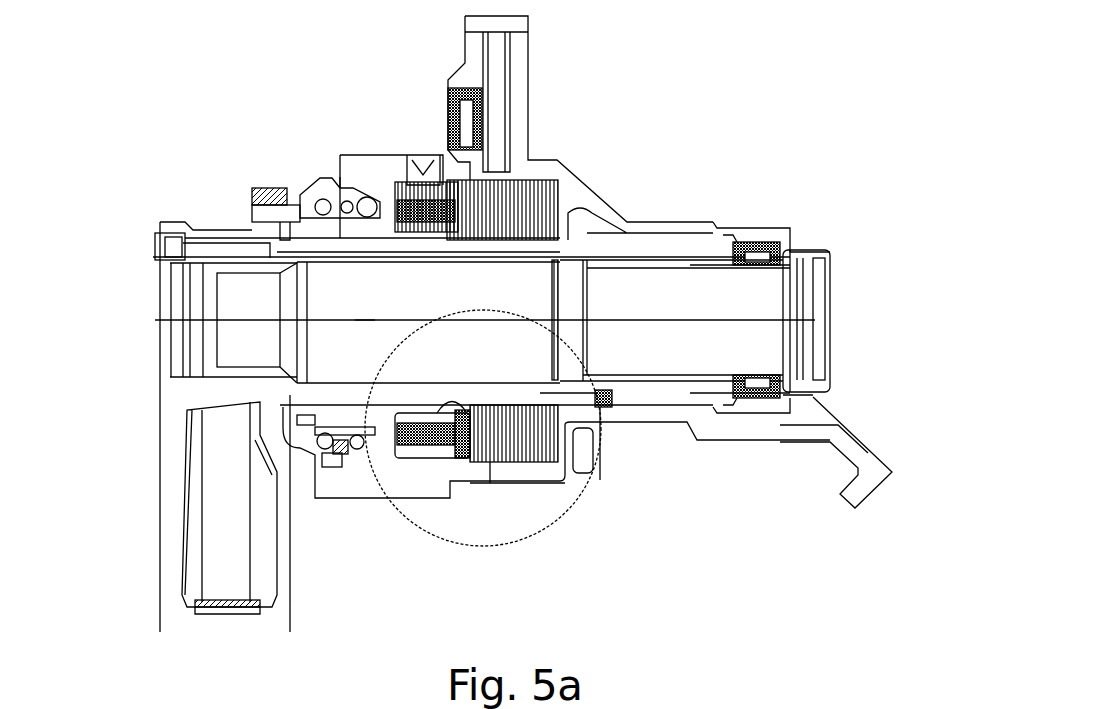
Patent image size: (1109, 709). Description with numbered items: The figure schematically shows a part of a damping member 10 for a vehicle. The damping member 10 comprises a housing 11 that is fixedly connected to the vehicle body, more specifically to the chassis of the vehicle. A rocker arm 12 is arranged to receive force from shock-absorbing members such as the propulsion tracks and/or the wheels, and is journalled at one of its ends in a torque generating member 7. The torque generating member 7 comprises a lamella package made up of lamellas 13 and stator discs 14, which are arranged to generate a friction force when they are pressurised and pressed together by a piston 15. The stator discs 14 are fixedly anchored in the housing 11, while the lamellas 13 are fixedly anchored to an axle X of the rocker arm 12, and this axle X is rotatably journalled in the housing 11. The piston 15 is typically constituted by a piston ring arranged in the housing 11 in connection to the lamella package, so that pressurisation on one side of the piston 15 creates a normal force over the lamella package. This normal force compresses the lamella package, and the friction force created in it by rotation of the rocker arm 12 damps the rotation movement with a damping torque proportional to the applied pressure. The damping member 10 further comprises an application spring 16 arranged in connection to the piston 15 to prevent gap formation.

The damping member 10 is at (522, 324).
The torque generating member 7 is at (588, 495).
The housing 11 is at (719, 445).
The rocker arm 12 is at (296, 582).
The lamellas 13 is at (500, 492).
The stator discs 14 is at (508, 460).
The piston 15 is at (462, 447).
The application spring 16 is at (424, 447).
The axle X is at (361, 331).